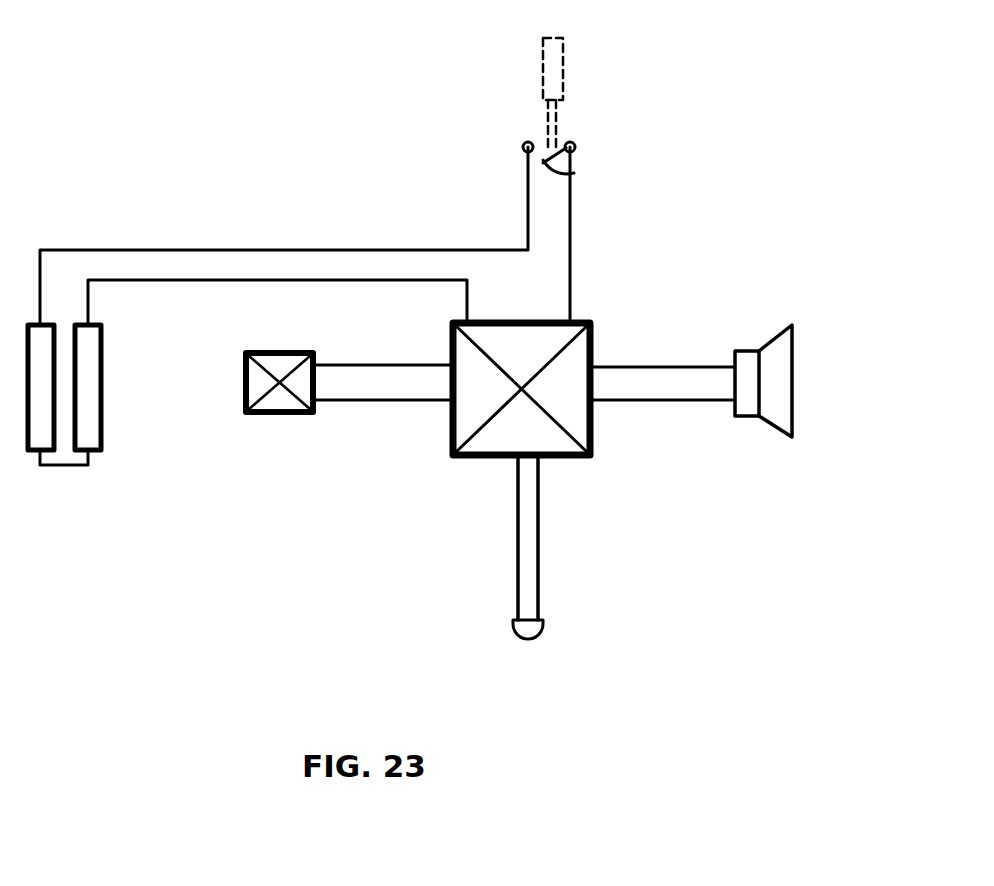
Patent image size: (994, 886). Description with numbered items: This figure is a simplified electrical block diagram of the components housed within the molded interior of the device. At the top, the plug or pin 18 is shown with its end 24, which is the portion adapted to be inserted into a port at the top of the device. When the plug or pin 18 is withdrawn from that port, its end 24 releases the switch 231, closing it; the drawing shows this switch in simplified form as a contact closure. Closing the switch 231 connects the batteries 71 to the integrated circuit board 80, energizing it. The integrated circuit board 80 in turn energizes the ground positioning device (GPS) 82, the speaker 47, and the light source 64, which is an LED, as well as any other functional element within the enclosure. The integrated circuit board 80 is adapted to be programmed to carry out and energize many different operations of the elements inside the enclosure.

The plug or pin 18 is at (566, 57).
The end of plug or pin 24 is at (556, 123).
The switch 231 is at (574, 173).
The batteries 71 is at (40, 368).
The ground positioning device (GPS) 82 is at (254, 350).
The integrated circuit board 80 is at (485, 460).
The speaker 47 is at (745, 423).
The light source 64 is at (546, 628).